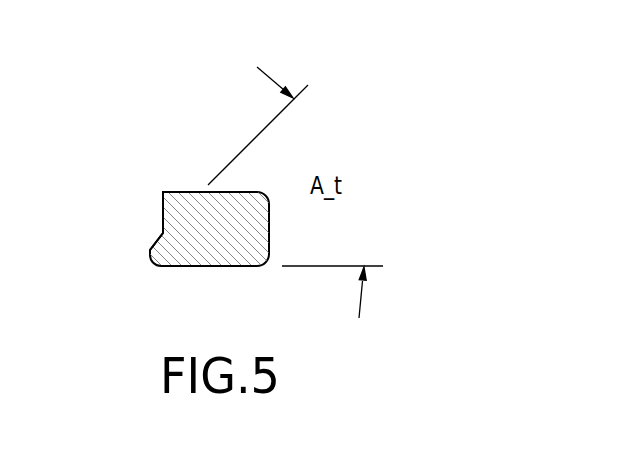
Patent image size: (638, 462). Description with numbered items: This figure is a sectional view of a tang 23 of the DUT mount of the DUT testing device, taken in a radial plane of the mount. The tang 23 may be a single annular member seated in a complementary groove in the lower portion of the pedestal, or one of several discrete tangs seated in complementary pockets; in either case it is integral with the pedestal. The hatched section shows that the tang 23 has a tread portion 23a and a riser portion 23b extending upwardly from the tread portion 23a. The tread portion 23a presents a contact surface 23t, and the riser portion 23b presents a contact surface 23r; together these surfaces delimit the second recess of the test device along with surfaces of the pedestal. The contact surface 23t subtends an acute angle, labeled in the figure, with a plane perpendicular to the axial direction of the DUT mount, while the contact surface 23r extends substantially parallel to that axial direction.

The tang 23 is at (413, 161).
The tread portion 23a is at (163, 253).
The riser portion 23b is at (172, 203).
The contact surface 23r is at (163, 206).
The contact surface 23t is at (155, 253).